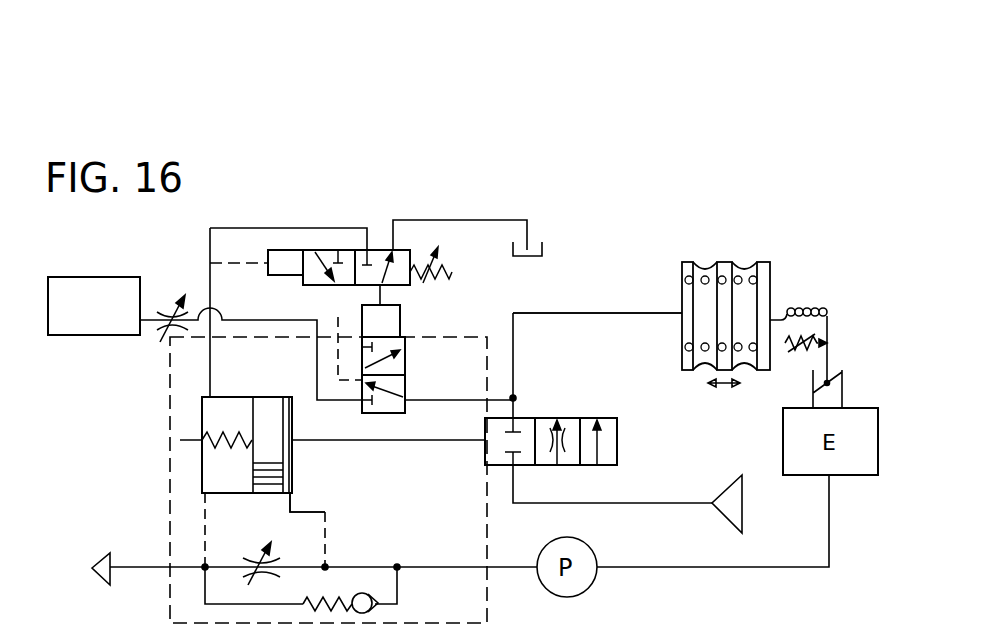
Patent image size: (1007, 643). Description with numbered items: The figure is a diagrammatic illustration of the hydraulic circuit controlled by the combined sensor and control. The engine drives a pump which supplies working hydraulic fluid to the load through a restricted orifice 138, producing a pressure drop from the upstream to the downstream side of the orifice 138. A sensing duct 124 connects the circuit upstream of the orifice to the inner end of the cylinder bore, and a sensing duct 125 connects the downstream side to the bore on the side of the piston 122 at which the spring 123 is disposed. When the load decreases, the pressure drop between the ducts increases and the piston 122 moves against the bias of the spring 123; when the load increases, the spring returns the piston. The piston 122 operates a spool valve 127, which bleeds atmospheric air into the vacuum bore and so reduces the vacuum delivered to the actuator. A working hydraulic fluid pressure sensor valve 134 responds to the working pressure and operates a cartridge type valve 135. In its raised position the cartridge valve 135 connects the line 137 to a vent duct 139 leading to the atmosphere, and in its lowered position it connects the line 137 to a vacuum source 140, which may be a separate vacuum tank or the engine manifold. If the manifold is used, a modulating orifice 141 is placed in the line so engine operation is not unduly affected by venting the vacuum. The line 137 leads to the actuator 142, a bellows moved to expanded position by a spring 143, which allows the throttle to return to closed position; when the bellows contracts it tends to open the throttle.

The piston 122 is at (273, 475).
The spring 123 is at (223, 450).
The sensing duct 124 is at (313, 507).
The sensing duct 125 is at (216, 532).
The spool valve 127 is at (593, 418).
The working hydraulic fluid pressure sensor valve 134 is at (377, 250).
The cartridge type valve 135 is at (405, 387).
The duct 137 is at (575, 312).
The restricted orifice 138 is at (283, 560).
The vent duct 139 is at (337, 350).
The vacuum source 140 is at (127, 327).
The modulating orifice 141 is at (167, 308).
The actuator 142 is at (757, 291).
The spring 143 is at (750, 280).